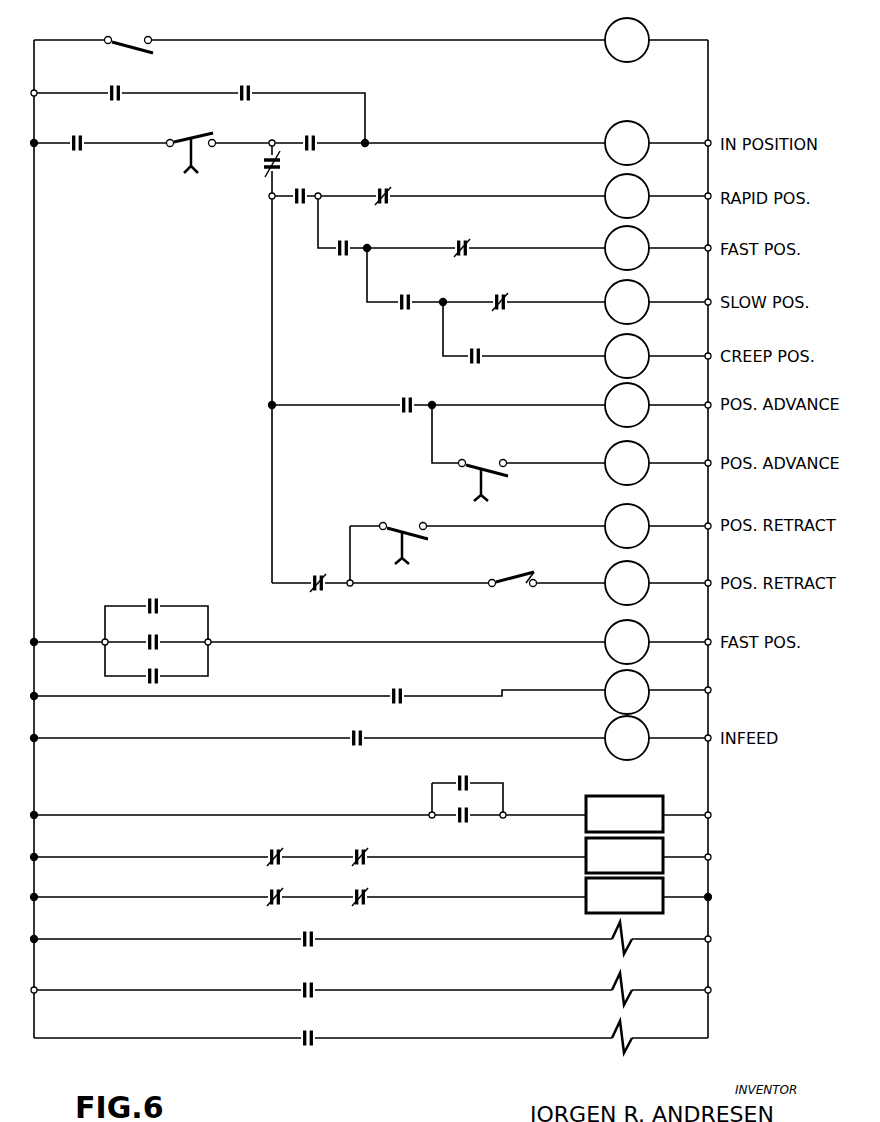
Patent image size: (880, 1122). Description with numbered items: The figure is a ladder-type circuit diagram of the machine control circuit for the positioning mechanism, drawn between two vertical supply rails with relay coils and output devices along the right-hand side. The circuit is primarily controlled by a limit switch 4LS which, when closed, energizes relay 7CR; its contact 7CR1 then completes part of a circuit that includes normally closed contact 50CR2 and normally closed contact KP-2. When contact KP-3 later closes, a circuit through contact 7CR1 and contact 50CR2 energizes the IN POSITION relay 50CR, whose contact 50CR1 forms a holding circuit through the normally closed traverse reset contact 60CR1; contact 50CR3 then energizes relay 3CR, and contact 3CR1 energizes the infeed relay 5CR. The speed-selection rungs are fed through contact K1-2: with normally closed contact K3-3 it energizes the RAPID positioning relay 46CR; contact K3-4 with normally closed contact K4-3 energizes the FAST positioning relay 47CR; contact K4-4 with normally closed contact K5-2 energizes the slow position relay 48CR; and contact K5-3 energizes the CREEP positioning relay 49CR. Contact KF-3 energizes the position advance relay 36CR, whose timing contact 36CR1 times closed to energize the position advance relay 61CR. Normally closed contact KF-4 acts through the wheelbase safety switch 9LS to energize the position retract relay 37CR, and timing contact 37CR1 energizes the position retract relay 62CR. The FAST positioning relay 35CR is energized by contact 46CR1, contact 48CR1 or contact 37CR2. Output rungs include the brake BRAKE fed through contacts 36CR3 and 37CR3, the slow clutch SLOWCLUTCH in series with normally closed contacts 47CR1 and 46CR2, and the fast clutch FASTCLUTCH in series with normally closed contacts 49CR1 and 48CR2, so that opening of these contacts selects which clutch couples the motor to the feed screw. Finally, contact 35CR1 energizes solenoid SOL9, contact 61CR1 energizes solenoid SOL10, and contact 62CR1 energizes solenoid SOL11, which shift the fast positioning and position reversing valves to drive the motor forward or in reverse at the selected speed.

The limit switch 4LS is at (137, 33).
The traverse reset contact 60CR1 is at (147, 85).
The contact 50CR1 is at (276, 85).
The contact 7CR1 is at (101, 135).
The normally closed timing contact 50CR2 is at (223, 145).
The normally open contact KP-3 is at (331, 135).
The normally closed contact KP-2 is at (249, 169).
The contact K1-2 is at (316, 186).
The normally closed contact K3-3 is at (405, 185).
The contact K3-4 is at (363, 239).
The normally closed contact K4-3 is at (482, 239).
The normally open contact K4-4 is at (426, 293).
The normally closed contact K5-2 is at (523, 293).
The contact K5-3 is at (497, 347).
The contact KF-3 is at (426, 395).
The timing contact 36CR1 is at (492, 468).
The timing contact 37CR1 is at (406, 531).
The normally closed contact KF-4 is at (305, 568).
The wheelbase safety switch 9LS is at (513, 570).
The contact 37CR2 is at (182, 599).
The contact 46CR1 is at (182, 635).
The contact 48CR1 is at (182, 669).
The contact 50CR3 is at (423, 686).
The contact 3CR1 is at (381, 729).
The contact 36CR3 is at (493, 776).
The contact 37CR3 is at (489, 823).
The normally closed contact 47CR1 is at (239, 848).
The normally closed contact 46CR2 is at (385, 847).
The normally closed contact 49CR1 is at (239, 888).
The normally closed contact 48CR2 is at (400, 888).
The contact 35CR1 is at (338, 931).
The contact 61CR1 is at (338, 982).
The contact 62CR1 is at (338, 1030).
The relay 7CR is at (627, 40).
The IN POSITION relay 50CR is at (627, 143).
The RAPID positioning relay 46CR is at (627, 196).
The FAST positioning relay 47CR is at (627, 248).
The slow position relay 48CR is at (627, 302).
The CREEP positioning relay 49CR is at (627, 356).
The position advance relay 36CR is at (627, 405).
The position advance relay 61CR is at (627, 463).
The position retract relay 62CR is at (627, 526).
The position retract relay 37CR is at (627, 583).
The FAST positioning relay 35CR is at (627, 642).
The relay 3CR is at (627, 692).
The infeed relay 5CR is at (627, 738).
The brake BRAKE is at (624, 814).
The slow clutch SLOWCLUTCH is at (624, 855).
The fast clutch FASTCLUTCH is at (624, 895).
The solenoid SOL9 is at (647, 941).
The solenoid SOL10 is at (652, 992).
The solenoid SOL11 is at (654, 1040).